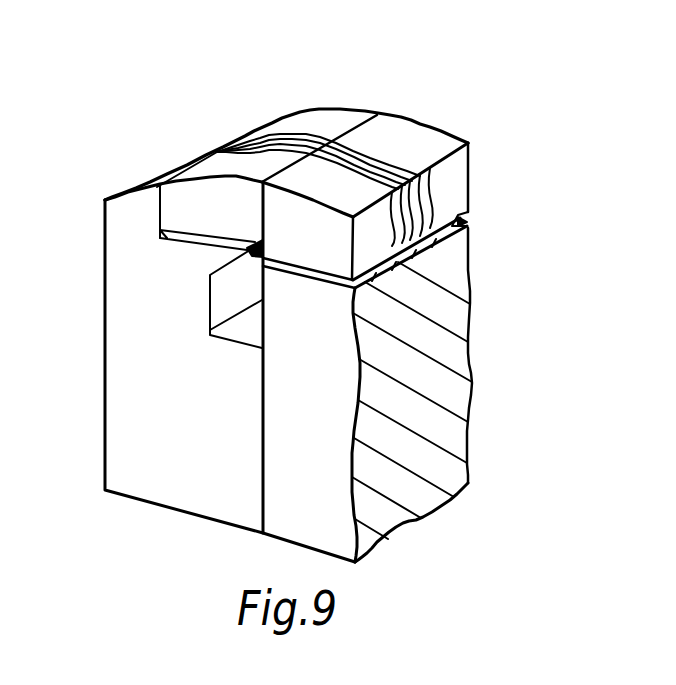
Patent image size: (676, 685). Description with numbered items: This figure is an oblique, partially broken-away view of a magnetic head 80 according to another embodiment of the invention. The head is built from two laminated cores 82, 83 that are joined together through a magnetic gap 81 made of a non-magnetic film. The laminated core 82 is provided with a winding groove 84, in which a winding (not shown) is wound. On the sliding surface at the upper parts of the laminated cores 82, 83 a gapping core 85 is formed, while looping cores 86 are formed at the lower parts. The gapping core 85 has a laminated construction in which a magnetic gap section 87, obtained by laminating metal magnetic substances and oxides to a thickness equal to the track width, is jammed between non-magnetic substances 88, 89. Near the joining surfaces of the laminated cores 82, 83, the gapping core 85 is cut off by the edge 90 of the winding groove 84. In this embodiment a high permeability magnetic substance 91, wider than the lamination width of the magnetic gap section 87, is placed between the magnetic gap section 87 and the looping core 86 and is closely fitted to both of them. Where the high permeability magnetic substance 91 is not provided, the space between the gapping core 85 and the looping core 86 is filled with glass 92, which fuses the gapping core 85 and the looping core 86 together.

The magnetic head 80 is at (401, 103).
The magnetic gap 81 is at (357, 123).
The laminated core 82 is at (302, 99).
The laminated core 83 is at (486, 138).
The winding groove 84 is at (214, 305).
The gapping core 85 is at (175, 196).
The looping core 86 is at (103, 372).
The magnetic gap section 87 is at (257, 130).
The non-magnetic substance 88 is at (367, 187).
The non-magnetic substance 89 is at (378, 262).
The edge of the winding groove 90 is at (245, 259).
The high permeability magnetic substance 91 is at (418, 257).
The glass 92 is at (466, 224).